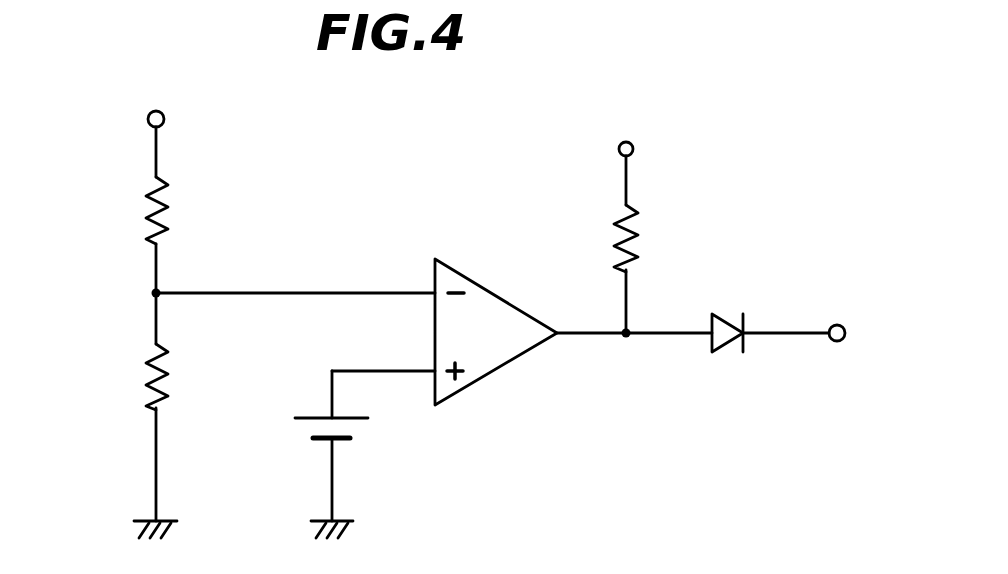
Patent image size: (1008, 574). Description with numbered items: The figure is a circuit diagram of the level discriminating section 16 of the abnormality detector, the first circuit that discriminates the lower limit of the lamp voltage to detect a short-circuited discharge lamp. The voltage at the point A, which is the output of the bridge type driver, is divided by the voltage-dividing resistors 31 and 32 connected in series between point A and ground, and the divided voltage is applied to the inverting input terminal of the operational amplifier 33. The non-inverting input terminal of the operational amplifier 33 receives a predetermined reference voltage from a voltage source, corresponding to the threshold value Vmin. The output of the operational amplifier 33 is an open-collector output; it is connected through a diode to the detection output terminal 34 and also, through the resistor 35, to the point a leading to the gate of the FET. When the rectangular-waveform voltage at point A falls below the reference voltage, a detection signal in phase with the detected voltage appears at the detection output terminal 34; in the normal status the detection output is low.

The level discriminating section 16 is at (730, 160).
The voltage-dividing resistor 31 is at (148, 212).
The voltage-dividing resistor 32 is at (148, 377).
The operational amplifier 33 is at (496, 295).
The detection output terminal 34 is at (839, 324).
The resistor 35 is at (634, 231).